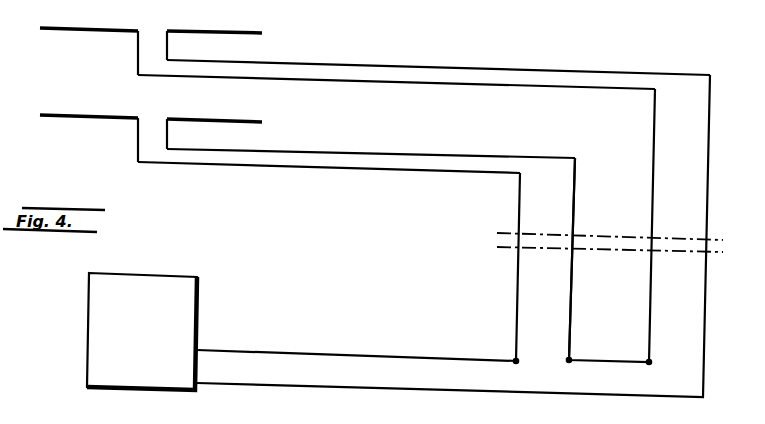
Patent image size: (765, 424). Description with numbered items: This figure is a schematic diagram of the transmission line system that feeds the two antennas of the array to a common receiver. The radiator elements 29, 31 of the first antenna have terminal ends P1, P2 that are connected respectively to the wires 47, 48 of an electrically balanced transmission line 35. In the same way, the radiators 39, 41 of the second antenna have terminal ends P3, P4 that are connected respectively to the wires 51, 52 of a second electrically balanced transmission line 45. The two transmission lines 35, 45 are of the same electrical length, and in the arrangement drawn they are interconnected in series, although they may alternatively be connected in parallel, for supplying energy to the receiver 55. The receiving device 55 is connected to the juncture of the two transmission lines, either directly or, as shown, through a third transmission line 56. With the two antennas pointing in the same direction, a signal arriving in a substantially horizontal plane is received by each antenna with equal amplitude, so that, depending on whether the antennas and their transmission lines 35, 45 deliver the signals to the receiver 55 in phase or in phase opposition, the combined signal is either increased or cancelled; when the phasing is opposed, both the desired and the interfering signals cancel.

The radiator element 29 is at (96, 114).
The radiator element 31 is at (211, 118).
The radiator 39 is at (57, 28).
The radiator 41 is at (246, 23).
The terminal end P1 is at (146, 111).
The terminal end P2 is at (164, 121).
The terminal end P3 is at (146, 21).
The terminal end P4 is at (167, 30).
The electrically balanced transmission line 35 is at (396, 161).
The electrically balanced transmission line 45 is at (392, 73).
The wire 47 is at (368, 169).
The wire 48 is at (366, 152).
The wire 51 is at (325, 80).
The wire 52 is at (328, 63).
The receiver 55 is at (92, 326).
The third transmission line 56 is at (281, 349).